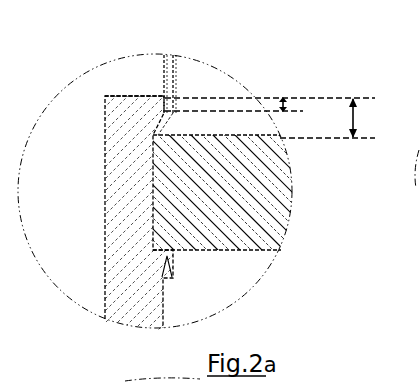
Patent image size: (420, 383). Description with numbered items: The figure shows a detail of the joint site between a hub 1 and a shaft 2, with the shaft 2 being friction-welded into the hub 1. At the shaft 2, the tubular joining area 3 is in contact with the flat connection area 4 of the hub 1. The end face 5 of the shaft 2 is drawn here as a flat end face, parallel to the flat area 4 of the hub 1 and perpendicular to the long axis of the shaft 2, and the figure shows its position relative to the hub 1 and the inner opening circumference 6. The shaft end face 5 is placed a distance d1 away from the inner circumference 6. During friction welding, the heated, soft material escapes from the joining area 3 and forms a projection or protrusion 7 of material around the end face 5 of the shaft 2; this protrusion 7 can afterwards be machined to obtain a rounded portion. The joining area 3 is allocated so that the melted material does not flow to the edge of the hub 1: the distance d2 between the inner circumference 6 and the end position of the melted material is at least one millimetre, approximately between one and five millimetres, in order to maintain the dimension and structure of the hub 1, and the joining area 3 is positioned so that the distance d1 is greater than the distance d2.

The hub 1 is at (105, 320).
The shaft 2 is at (253, 207).
The joining area with tubular shape 3 is at (208, 66).
The joining area with flat shape 4 is at (170, 84).
The end face of shaft 5 is at (152, 188).
The inner circumference 6 is at (162, 97).
The protrusion 7 is at (177, 260).
The distance d1 is at (347, 118).
The distance d2 is at (270, 87).